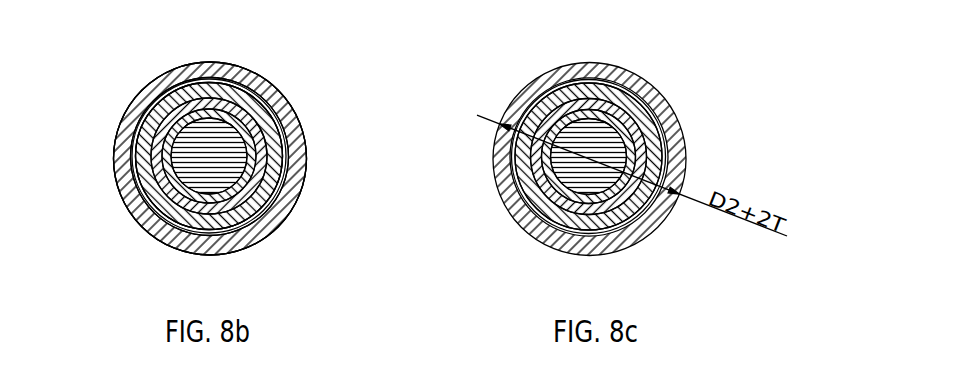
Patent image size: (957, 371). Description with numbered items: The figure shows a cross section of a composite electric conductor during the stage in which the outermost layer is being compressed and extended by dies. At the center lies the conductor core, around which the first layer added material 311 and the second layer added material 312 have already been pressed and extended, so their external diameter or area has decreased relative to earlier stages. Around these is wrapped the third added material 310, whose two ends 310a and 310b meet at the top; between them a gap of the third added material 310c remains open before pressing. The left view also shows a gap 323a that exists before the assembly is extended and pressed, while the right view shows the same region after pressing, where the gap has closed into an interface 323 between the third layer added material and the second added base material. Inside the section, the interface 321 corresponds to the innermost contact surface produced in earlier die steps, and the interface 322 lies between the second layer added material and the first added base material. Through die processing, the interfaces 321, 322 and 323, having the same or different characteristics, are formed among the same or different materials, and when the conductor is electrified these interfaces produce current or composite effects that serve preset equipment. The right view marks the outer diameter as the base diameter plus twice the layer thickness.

In FIG. 8B, the third added material 310 is at (262, 233).
In FIG. 8B, the end of third added material 310a is at (206, 74).
In FIG. 8B, the end of third added material 310b is at (213, 75).
In FIG. 8B, the gap of third added material 310c is at (208, 75).
In FIG. 8B, the first layer added material 311 is at (289, 115).
In FIG. 8B, the second layer added material 312 is at (280, 172).
In FIG. 8B, the interface 321 is at (157, 150).
In FIG. 8C, the interface 321 is at (650, 120).
In FIG. 8B, the interface 322 is at (148, 175).
In FIG. 8C, the interface 322 is at (658, 138).
In FIG. 8C, the interface 323 is at (677, 155).
In FIG. 8B, the gap 323a is at (132, 150).